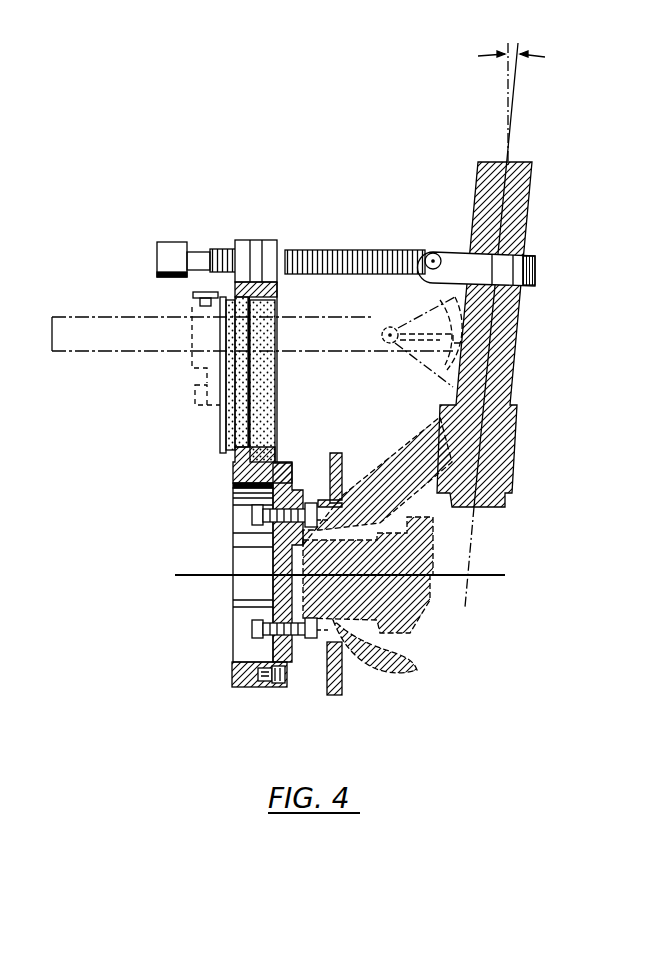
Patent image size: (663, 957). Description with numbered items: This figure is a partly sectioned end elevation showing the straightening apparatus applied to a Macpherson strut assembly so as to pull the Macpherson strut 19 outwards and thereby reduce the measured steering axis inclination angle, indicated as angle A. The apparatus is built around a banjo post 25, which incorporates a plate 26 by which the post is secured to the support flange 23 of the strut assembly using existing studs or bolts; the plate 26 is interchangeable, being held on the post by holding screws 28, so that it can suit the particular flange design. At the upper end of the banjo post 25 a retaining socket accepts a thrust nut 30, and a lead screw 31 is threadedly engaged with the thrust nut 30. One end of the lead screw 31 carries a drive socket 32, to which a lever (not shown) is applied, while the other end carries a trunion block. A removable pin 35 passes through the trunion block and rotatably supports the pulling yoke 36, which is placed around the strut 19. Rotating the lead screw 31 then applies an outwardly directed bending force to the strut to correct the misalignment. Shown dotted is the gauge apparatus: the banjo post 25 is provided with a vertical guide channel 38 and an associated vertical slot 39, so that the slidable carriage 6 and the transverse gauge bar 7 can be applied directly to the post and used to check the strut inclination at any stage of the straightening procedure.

The slidable carriage 6 is at (203, 342).
The gauge bar 7 is at (363, 342).
The Macpherson strut 19 is at (512, 300).
The support flange 23 is at (303, 594).
The banjo post 25 is at (263, 436).
The plate 26 is at (287, 648).
The holding screws 28 is at (303, 679).
The thrust nut 30 is at (252, 246).
The lead screw 31 is at (338, 250).
The drive socket 32 is at (166, 256).
The removable pin 35 is at (441, 258).
The pulling yoke 36 is at (526, 258).
The vertical guide channel 38 is at (222, 416).
The vertical slot 39 is at (242, 433).
The tilt angle A is at (518, 44).